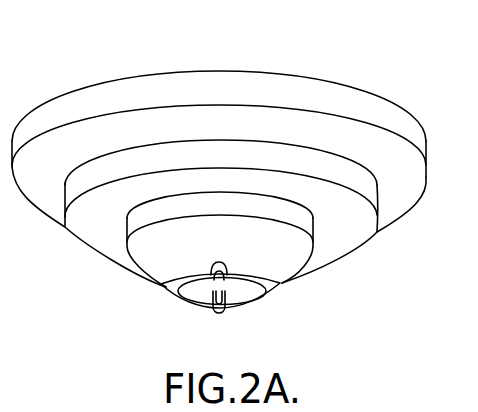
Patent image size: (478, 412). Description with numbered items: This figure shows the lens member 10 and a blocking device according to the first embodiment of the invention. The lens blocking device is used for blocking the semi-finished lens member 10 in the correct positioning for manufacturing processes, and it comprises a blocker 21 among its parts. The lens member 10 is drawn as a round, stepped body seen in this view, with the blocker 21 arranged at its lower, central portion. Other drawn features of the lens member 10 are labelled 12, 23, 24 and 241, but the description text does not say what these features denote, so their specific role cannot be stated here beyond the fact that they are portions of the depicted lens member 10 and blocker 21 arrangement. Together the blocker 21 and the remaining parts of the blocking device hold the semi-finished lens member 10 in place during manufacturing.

The lens member 10 is at (398, 125).
The top ring 12 is at (290, 72).
The blocker 21 is at (183, 210).
The bottom rim 23 is at (425, 178).
The intermediate disc 24 is at (115, 213).
The disc side wall 241 is at (368, 212).